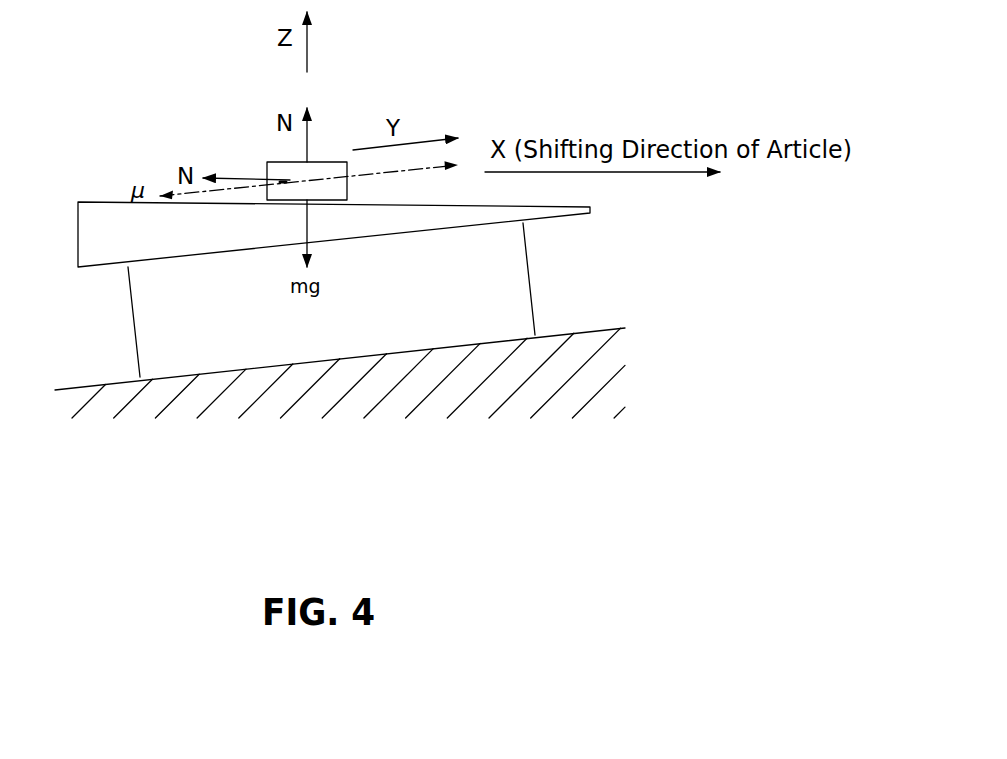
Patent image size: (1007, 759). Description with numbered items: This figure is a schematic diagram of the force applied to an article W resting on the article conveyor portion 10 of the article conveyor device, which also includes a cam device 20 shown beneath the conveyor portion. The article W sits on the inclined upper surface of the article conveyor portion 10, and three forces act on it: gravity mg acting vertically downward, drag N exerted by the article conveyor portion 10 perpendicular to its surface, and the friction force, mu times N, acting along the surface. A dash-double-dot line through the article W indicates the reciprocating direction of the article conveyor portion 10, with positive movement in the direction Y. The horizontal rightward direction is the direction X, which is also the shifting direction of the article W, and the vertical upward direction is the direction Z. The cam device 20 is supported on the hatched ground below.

The article conveyor portion 10 is at (99, 201).
The cam device 20 is at (552, 288).
The article W is at (278, 162).